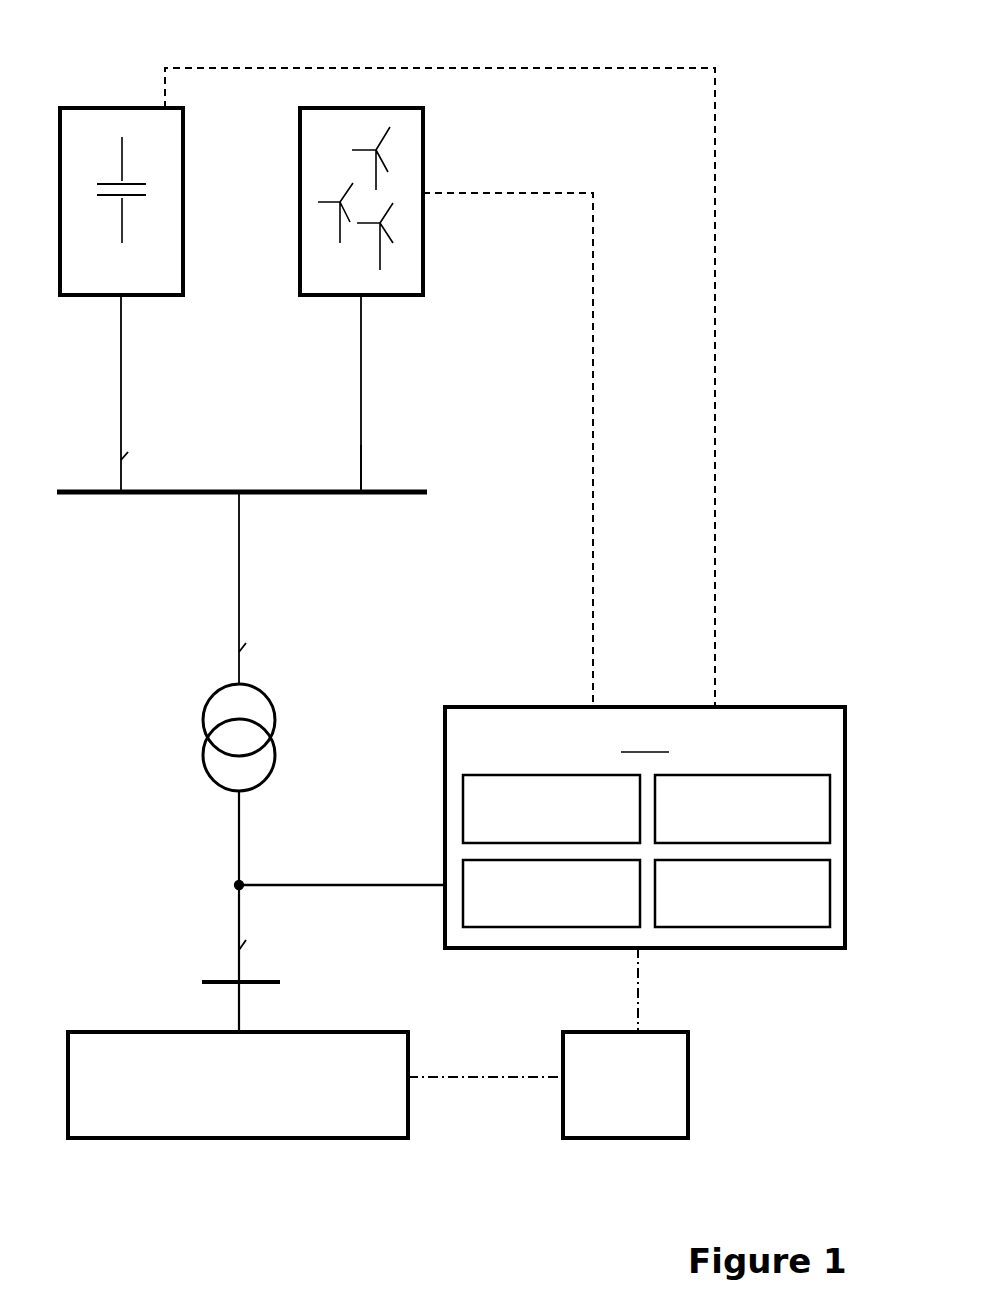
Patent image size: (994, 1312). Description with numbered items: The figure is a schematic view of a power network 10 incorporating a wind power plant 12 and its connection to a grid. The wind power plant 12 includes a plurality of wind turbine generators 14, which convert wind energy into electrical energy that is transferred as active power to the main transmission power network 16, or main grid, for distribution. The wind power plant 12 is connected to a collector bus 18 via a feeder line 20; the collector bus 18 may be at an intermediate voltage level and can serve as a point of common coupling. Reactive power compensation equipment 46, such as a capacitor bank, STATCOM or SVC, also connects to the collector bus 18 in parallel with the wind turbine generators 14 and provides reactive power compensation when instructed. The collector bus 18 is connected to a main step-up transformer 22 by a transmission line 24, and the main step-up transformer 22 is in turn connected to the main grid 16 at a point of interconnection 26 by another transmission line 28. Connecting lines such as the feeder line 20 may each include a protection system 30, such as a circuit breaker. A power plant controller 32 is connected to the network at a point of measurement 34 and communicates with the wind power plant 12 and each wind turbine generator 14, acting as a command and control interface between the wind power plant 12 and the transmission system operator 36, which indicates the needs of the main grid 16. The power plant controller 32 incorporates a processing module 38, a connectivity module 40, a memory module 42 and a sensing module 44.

The power network 10 is at (762, 167).
The wind power plant 12 is at (233, 115).
The wind turbine generators 14 is at (423, 145).
The main transmission power network 16 is at (75, 1032).
The collector bus 18 is at (427, 487).
The feeder line 20 is at (361, 352).
The main step-up transformer 22 is at (262, 686).
The transmission line 24 is at (240, 592).
The point of interconnection 26 is at (280, 977).
The transmission line 28 is at (242, 824).
The protection system 30 is at (362, 462).
The power plant controller 32 is at (758, 707).
The point of measurement 34 is at (239, 885).
The transmission system operator 36 is at (690, 1068).
The processing module 38 is at (480, 775).
The connectivity module 40 is at (725, 775).
The memory module 42 is at (505, 927).
The sensing module 44 is at (800, 927).
The reactive power compensation equipment 46 is at (183, 238).